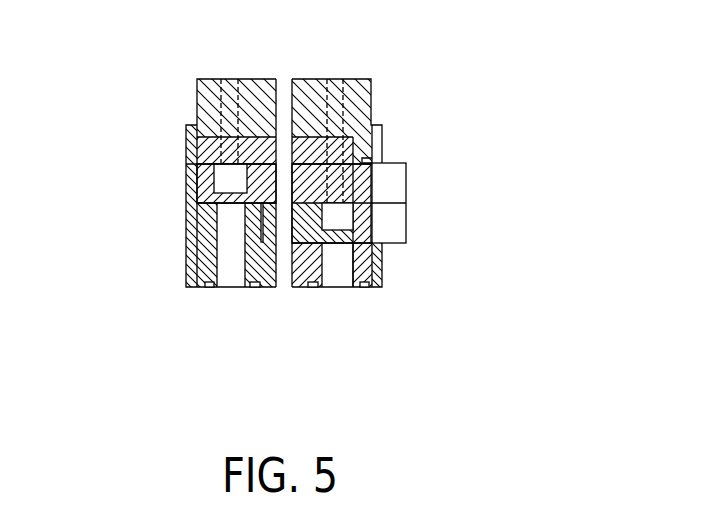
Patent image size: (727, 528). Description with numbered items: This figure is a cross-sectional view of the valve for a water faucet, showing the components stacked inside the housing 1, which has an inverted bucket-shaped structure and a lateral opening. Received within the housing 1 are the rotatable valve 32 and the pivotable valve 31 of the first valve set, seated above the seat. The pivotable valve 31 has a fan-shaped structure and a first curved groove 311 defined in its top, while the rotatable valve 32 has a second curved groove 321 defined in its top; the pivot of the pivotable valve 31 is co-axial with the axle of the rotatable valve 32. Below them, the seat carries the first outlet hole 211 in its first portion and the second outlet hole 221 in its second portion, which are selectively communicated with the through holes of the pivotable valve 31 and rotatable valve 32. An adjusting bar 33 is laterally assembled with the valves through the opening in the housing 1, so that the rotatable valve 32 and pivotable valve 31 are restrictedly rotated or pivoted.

The housing 1 is at (371, 95).
The adjusting bar 33 is at (406, 182).
The second curved groove 321 is at (227, 178).
The rotatable valve 32 is at (205, 193).
The first curved groove 311 is at (340, 217).
The pivotable valve 31 is at (369, 234).
The first outlet hole 211 is at (347, 272).
The second outlet hole 221 is at (229, 277).